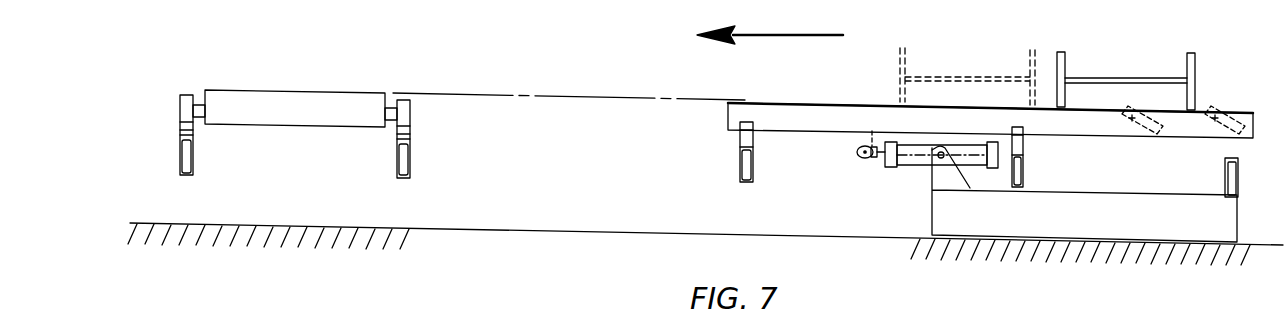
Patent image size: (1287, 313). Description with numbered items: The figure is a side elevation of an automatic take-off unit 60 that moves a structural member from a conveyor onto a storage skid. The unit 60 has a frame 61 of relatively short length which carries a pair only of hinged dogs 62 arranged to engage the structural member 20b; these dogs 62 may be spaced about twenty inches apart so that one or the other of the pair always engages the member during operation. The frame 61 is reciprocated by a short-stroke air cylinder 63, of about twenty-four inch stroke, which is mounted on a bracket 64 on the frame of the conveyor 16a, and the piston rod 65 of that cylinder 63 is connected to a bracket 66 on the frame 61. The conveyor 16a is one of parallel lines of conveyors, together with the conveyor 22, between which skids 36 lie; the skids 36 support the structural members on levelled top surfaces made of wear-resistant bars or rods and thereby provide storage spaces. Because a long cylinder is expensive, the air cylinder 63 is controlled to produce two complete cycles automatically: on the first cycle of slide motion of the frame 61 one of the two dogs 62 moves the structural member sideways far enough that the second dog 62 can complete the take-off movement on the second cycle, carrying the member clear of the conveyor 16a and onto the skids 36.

The conveyor 22 is at (325, 127).
The skid 36 is at (600, 93).
The take-off unit 60 is at (960, 102).
The structural member 20b is at (1195, 75).
The hinged dogs 62 is at (1125, 108).
The conveyor 16a is at (1177, 138).
The frame 61 is at (778, 132).
The bracket 66 is at (848, 133).
The piston rod 65 is at (858, 153).
The air cylinder 63 is at (905, 167).
The bracket 64 is at (932, 175).